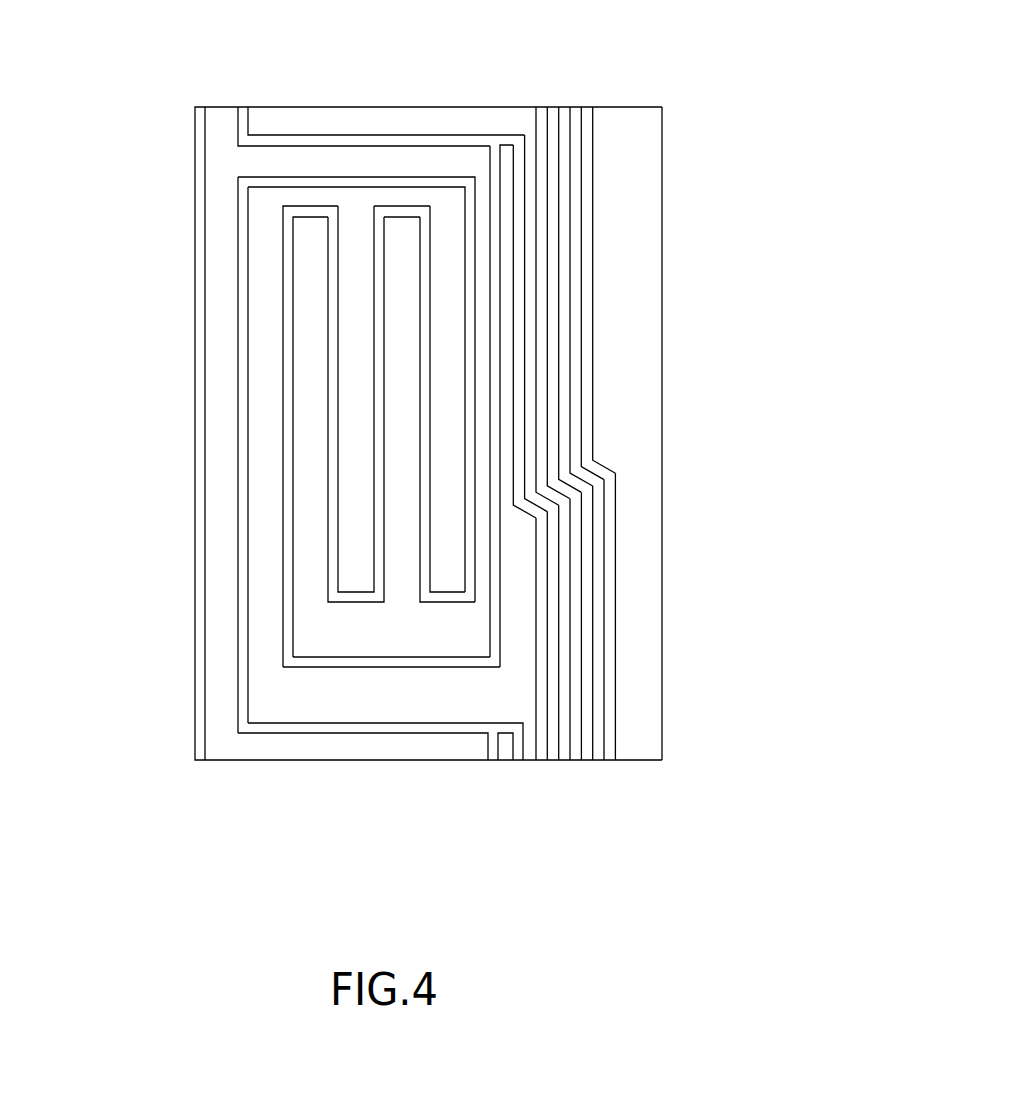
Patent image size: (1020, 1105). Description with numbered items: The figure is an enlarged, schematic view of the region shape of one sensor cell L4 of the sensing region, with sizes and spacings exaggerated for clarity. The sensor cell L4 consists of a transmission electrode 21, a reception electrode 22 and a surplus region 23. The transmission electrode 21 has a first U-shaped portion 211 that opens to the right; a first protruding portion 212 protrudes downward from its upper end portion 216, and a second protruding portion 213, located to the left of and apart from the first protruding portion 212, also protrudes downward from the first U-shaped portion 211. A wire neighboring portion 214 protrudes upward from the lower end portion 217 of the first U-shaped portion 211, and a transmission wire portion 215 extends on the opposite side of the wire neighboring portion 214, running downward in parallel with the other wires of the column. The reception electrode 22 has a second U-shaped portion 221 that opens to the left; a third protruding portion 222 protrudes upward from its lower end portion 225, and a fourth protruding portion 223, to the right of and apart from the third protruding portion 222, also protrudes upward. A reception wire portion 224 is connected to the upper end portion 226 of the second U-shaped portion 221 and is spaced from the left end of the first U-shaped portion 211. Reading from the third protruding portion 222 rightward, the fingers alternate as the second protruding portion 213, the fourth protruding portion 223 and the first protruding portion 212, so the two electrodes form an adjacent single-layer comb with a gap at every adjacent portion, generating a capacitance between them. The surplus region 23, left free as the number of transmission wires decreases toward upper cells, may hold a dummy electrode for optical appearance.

The sensor cell L4 is at (357, 107).
The transmission electrode 21 is at (347, 702).
The reception electrode 22 is at (287, 160).
The surplus region 23 is at (645, 680).
The first U-shaped portion 211 is at (266, 664).
The first protruding portion 212 is at (450, 360).
The second protruding portion 213 is at (350, 365).
The wire neighboring portion 214 is at (508, 238).
The transmission wire portion 215 is at (578, 285).
The upper end portion 216 is at (442, 205).
The lower end portion 217 is at (512, 698).
The second U-shaped portion 221 is at (482, 558).
The third protruding portion 222 is at (308, 272).
The fourth protruding portion 223 is at (400, 228).
The reception wire portion 224 is at (219, 433).
The lower end portion 225 is at (312, 627).
The upper end portion 226 is at (240, 160).